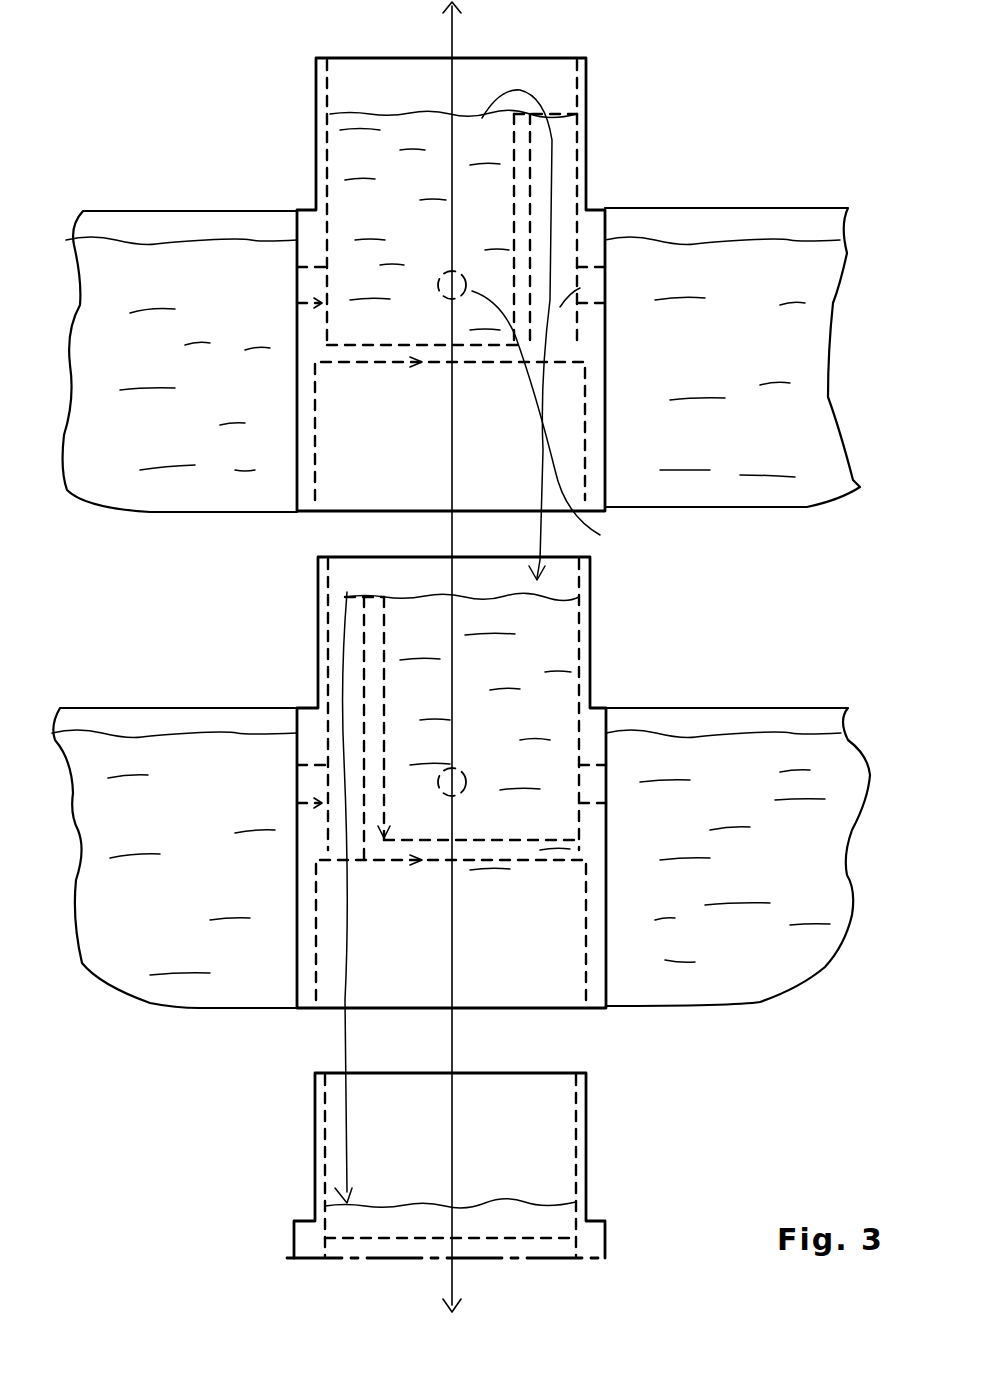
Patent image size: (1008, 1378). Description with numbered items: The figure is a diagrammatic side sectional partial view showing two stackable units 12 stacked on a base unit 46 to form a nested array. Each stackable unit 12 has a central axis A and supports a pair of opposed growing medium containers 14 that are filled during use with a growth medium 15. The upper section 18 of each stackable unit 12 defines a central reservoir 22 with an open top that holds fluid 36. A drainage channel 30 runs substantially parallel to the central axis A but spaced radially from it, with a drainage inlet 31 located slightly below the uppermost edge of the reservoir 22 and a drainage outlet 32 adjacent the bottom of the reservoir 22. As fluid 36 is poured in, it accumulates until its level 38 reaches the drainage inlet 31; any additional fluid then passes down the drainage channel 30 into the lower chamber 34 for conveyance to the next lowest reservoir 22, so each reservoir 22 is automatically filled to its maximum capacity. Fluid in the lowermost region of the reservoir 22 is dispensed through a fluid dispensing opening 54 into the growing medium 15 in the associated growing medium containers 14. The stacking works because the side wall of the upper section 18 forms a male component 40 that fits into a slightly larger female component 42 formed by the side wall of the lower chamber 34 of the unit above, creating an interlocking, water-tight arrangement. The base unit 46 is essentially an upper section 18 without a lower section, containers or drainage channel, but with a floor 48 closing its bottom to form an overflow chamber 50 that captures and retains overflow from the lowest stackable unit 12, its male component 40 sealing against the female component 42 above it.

The central axis A is at (452, 39).
The stackable unit 12 is at (538, 631).
The growing medium container 14 is at (180, 210).
The growth medium 15 is at (162, 362).
The upper section 18 is at (473, 931).
The reservoir 22 is at (480, 167).
The drainage channel 30 is at (578, 240).
The drainage inlet 31 is at (550, 97).
The drainage outlet 32 is at (360, 882).
The lower chamber 34 is at (458, 476).
The fluid 36 is at (348, 160).
The fluid level 38 is at (375, 112).
The male component 40 is at (588, 78).
The female component 42 is at (610, 473).
The base unit 46 is at (590, 1170).
The floor 48 is at (503, 1237).
The overflow chamber 50 is at (450, 900).
The fluid dispensing opening 54 is at (561, 424).